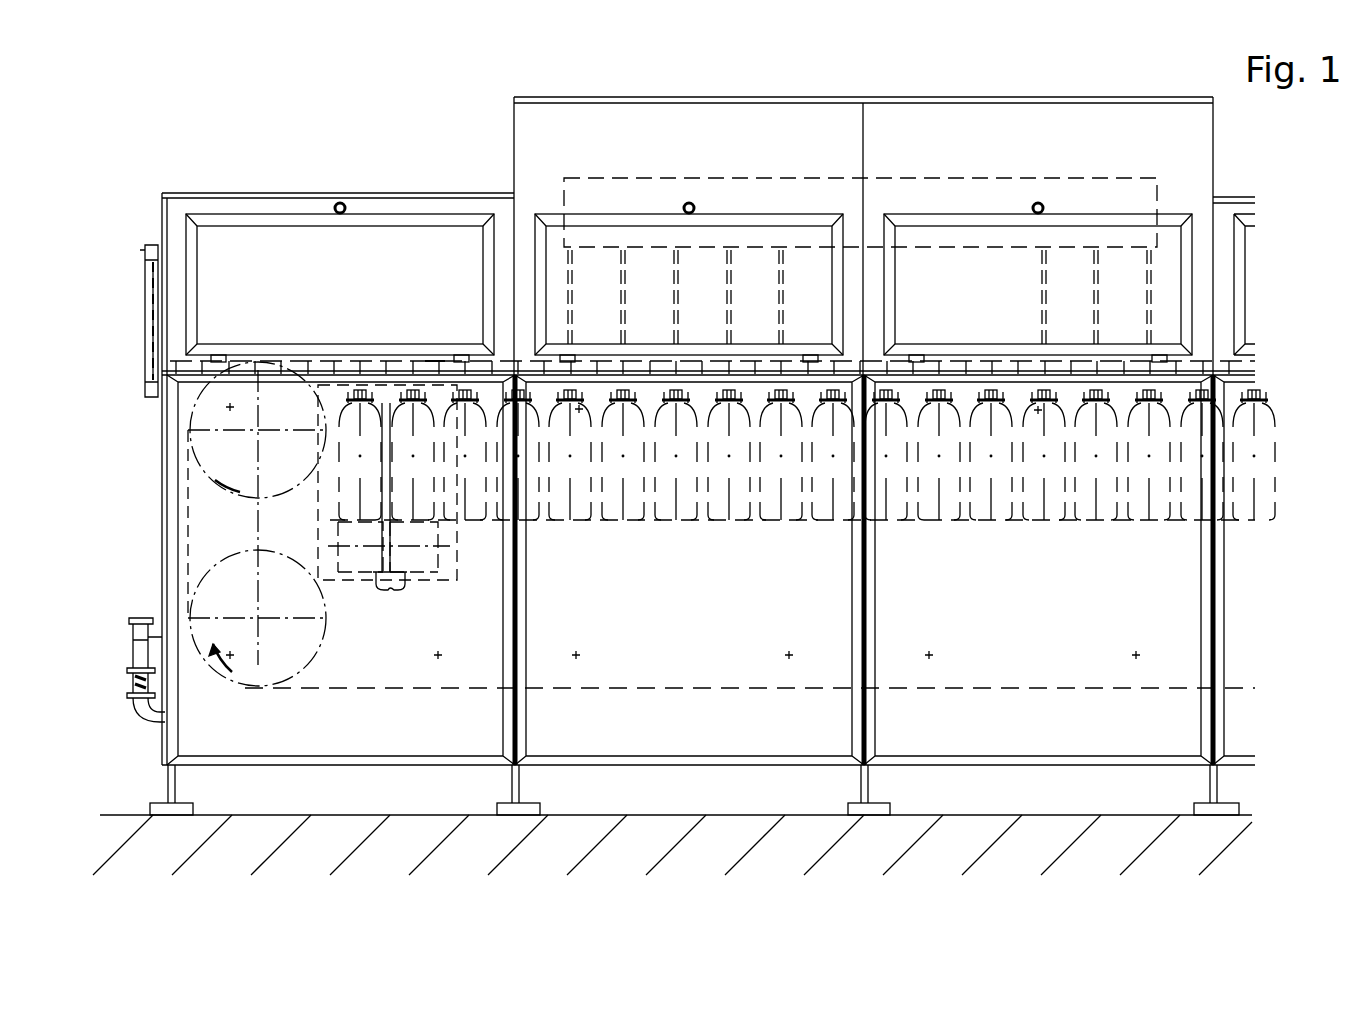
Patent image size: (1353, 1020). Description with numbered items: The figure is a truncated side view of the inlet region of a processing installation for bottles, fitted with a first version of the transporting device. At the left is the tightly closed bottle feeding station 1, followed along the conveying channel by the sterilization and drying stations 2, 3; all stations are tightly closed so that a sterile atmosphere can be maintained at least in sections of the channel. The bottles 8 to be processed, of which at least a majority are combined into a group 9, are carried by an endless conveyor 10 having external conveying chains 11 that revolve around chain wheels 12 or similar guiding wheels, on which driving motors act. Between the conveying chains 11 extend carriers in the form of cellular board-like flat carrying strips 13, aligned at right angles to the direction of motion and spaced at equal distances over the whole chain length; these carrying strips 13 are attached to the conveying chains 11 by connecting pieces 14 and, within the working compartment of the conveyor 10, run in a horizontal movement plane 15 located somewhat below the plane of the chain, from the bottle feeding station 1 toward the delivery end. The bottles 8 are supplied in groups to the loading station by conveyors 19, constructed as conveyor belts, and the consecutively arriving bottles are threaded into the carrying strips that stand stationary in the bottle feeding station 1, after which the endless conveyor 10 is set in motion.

The bottle feeding station 1 is at (420, 630).
The sterilization and drying station 2 is at (762, 630).
The sterilization and drying station 3 is at (1072, 628).
The bottle 8 is at (688, 498).
The group 9 is at (634, 532).
The endless conveyor 10 is at (436, 694).
The conveying chain 11 is at (307, 690).
The chain wheel 12 is at (245, 506).
The carrying strip 13 is at (342, 396).
The connecting piece 14 is at (431, 370).
The horizontal movement plane 15 is at (386, 397).
The conveyor 19 is at (385, 592).